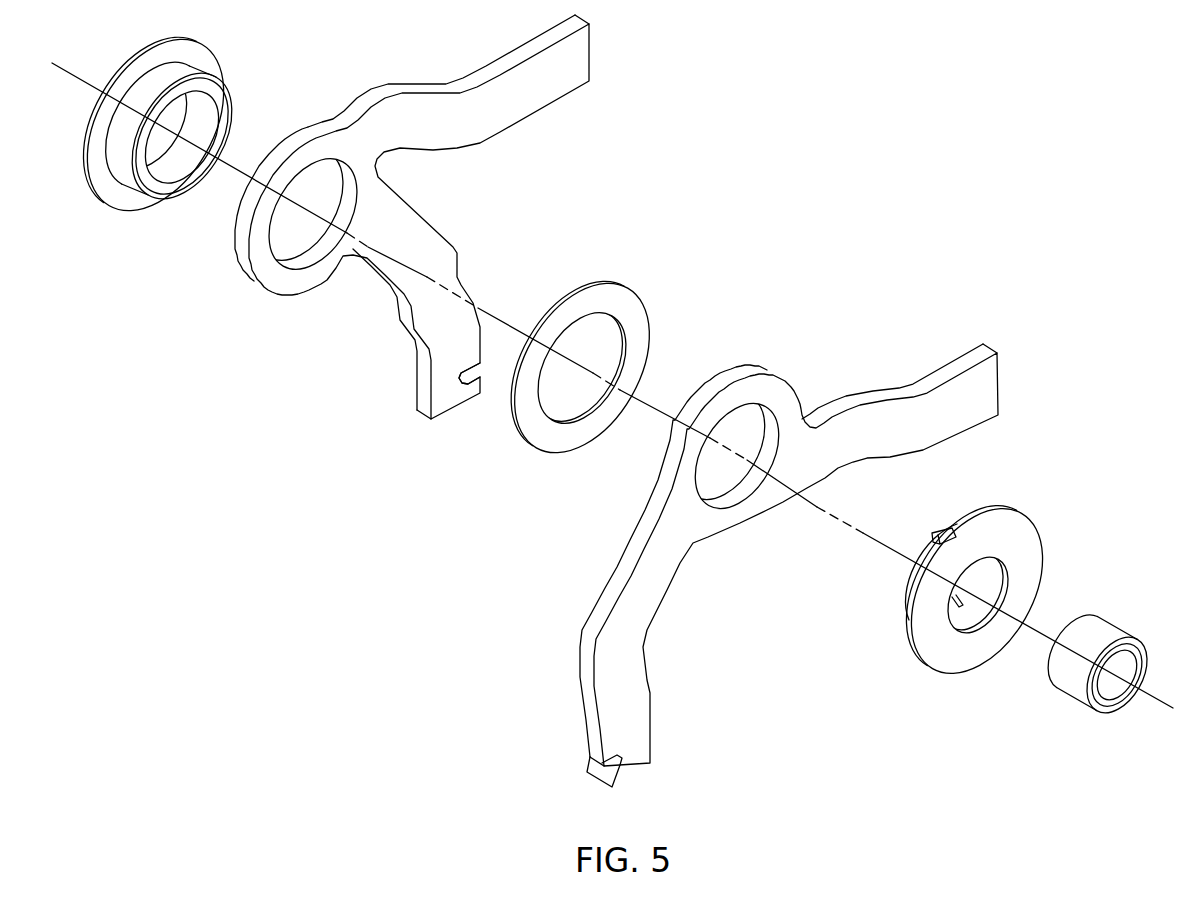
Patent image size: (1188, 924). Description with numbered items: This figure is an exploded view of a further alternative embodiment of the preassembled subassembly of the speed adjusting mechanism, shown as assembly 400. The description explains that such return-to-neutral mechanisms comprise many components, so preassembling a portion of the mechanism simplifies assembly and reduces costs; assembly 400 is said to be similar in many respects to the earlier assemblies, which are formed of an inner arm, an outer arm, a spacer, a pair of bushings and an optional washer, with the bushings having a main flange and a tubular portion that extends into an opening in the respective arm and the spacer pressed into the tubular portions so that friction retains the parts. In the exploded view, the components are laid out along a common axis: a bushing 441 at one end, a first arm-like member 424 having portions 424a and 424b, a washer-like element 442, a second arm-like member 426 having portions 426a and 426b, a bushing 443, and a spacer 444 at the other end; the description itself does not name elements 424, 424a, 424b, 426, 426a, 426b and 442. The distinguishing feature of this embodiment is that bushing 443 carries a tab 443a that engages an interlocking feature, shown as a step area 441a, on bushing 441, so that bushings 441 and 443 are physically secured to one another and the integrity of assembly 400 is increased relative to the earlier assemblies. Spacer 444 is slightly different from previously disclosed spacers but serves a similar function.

The assembly 400 is at (985, 137).
The first bracket 424 is at (428, 217).
The first bracket arm 424a is at (555, 82).
The first bracket leg 424b is at (447, 356).
The second bracket 426 is at (798, 529).
The second bracket arm 426a is at (966, 399).
The second bracket leg 426b is at (612, 688).
The bushing 441 is at (146, 125).
The step area 441a is at (170, 150).
The washer 442 is at (518, 417).
The bushing 443 is at (969, 595).
The tab 443a is at (945, 531).
The spacer 444 is at (1047, 680).